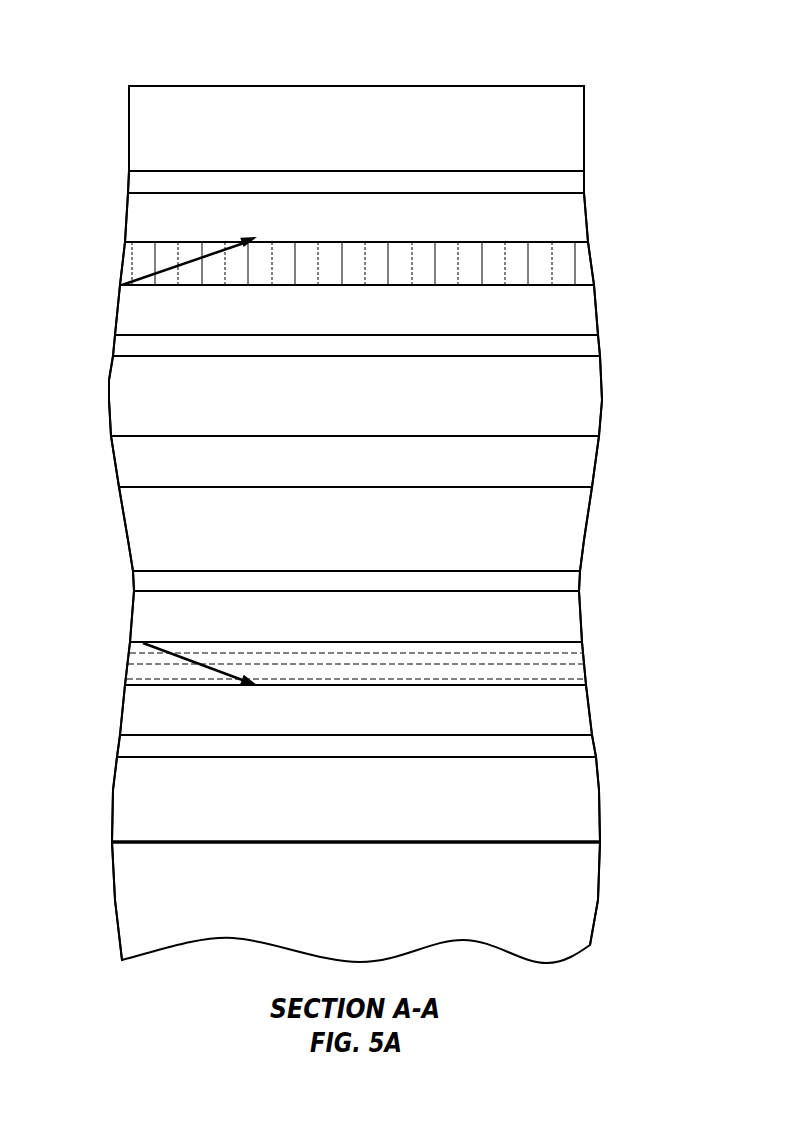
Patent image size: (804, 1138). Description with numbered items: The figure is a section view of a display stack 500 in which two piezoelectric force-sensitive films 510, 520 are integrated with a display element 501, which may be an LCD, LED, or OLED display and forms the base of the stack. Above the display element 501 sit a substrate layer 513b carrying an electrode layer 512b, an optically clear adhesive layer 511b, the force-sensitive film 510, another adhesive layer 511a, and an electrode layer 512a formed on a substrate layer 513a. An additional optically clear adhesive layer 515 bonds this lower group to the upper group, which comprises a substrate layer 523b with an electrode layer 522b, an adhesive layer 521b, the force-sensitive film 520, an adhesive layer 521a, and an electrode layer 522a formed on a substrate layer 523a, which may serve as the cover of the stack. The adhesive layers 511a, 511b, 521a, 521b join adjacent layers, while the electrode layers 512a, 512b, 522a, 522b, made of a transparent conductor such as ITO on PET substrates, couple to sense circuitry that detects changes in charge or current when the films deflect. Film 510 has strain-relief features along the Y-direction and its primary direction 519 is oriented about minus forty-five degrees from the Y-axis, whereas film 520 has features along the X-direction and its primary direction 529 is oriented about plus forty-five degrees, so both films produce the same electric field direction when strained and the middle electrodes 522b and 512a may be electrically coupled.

The display stack 500 is at (108, 62).
The display element 501 is at (599, 883).
The force-sensitive film 510 is at (584, 663).
The optically clear adhesive layer 511a is at (581, 618).
The optically clear adhesive layer 511b is at (589, 710).
The electrode layer 512a is at (580, 583).
The electrode layer 512b is at (594, 747).
The substrate layer 513a is at (585, 530).
The substrate layer 513b is at (599, 798).
The optically clear adhesive layer 515 is at (596, 462).
The primary direction 519 is at (190, 658).
The force-sensitive film 520 is at (591, 263).
The optically clear adhesive layer 521a is at (586, 217).
The optically clear adhesive layer 521b is at (596, 312).
The electrode layer 522a is at (584, 183).
The electrode layer 522b is at (599, 347).
The substrate layer 523a is at (584, 130).
The substrate layer 523b is at (602, 398).
The primary direction 529 is at (168, 265).